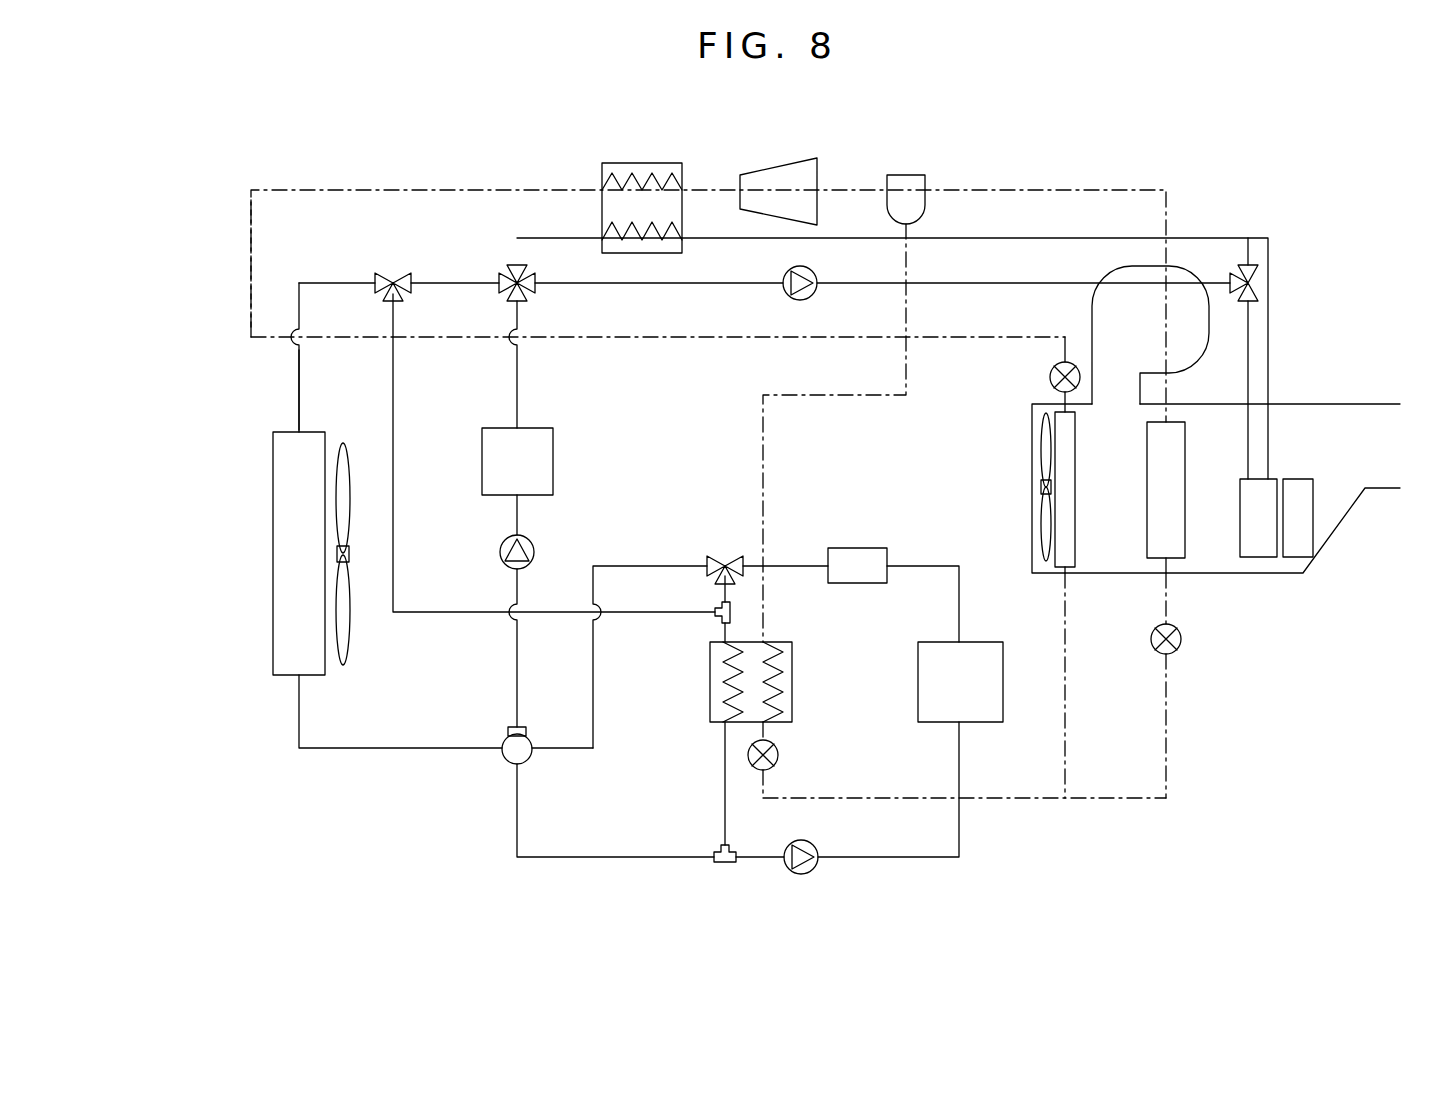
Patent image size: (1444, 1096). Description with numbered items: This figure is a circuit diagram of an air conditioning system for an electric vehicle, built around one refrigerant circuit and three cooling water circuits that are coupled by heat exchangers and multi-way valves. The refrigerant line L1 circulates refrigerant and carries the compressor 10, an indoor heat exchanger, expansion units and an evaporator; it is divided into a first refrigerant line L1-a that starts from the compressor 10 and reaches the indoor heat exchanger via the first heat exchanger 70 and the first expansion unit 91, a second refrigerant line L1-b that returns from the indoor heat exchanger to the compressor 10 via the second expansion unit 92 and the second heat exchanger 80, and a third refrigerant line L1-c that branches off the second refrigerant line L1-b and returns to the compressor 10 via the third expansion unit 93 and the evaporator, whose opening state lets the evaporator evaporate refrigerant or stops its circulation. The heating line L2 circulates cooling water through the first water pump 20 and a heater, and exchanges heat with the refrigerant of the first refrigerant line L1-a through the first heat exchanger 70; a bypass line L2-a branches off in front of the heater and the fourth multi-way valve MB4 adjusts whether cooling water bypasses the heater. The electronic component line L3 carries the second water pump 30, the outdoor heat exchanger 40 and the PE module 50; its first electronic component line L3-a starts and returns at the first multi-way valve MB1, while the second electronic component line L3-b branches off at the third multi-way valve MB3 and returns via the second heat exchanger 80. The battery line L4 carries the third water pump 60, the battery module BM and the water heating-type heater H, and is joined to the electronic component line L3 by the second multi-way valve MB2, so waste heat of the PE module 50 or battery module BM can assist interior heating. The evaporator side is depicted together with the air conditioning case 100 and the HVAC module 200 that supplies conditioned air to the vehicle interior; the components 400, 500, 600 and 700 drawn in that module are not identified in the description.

The compressor 10 is at (776, 160).
The first water pump 20 is at (790, 295).
The second water pump 30 is at (528, 540).
The outdoor heat exchanger 40 is at (273, 545).
The PE module 50 is at (553, 458).
The third water pump 60 is at (801, 875).
The first heat exchanger 70 is at (642, 163).
The second heat exchanger 80 is at (710, 688).
The first expansion unit 91 is at (1050, 377).
The second expansion unit 92 is at (778, 755).
The third expansion unit 93 is at (1182, 640).
The air conditioning case 100 is at (1213, 318).
The HVAC module 200 is at (1055, 453).
The interior condenser 400 is at (1155, 560).
The PTC heater 500 is at (1255, 560).
The blower fan 600 is at (1050, 520).
The air door 700 is at (1290, 560).
The first multi-way valve MB1 is at (517, 265).
The second multi-way valve MB2 is at (715, 553).
The third multi-way valve MB3 is at (393, 270).
The fourth multi-way valve MB4 is at (1262, 283).
The water heating-type heater H is at (860, 548).
The battery module BM is at (918, 672).
The refrigerant line L1 is at (1020, 190).
The first refrigerant line L1-a is at (251, 262).
The second refrigerant line L1-b is at (1000, 800).
The third refrigerant line L1-c is at (1166, 730).
The heating line L2 is at (1100, 238).
The bypass line L2-a is at (1248, 248).
The electronic component line L3 is at (335, 750).
The first electronic component line L3-a is at (299, 388).
The second electronic component line L3-b is at (517, 808).
The battery line L4 is at (959, 760).